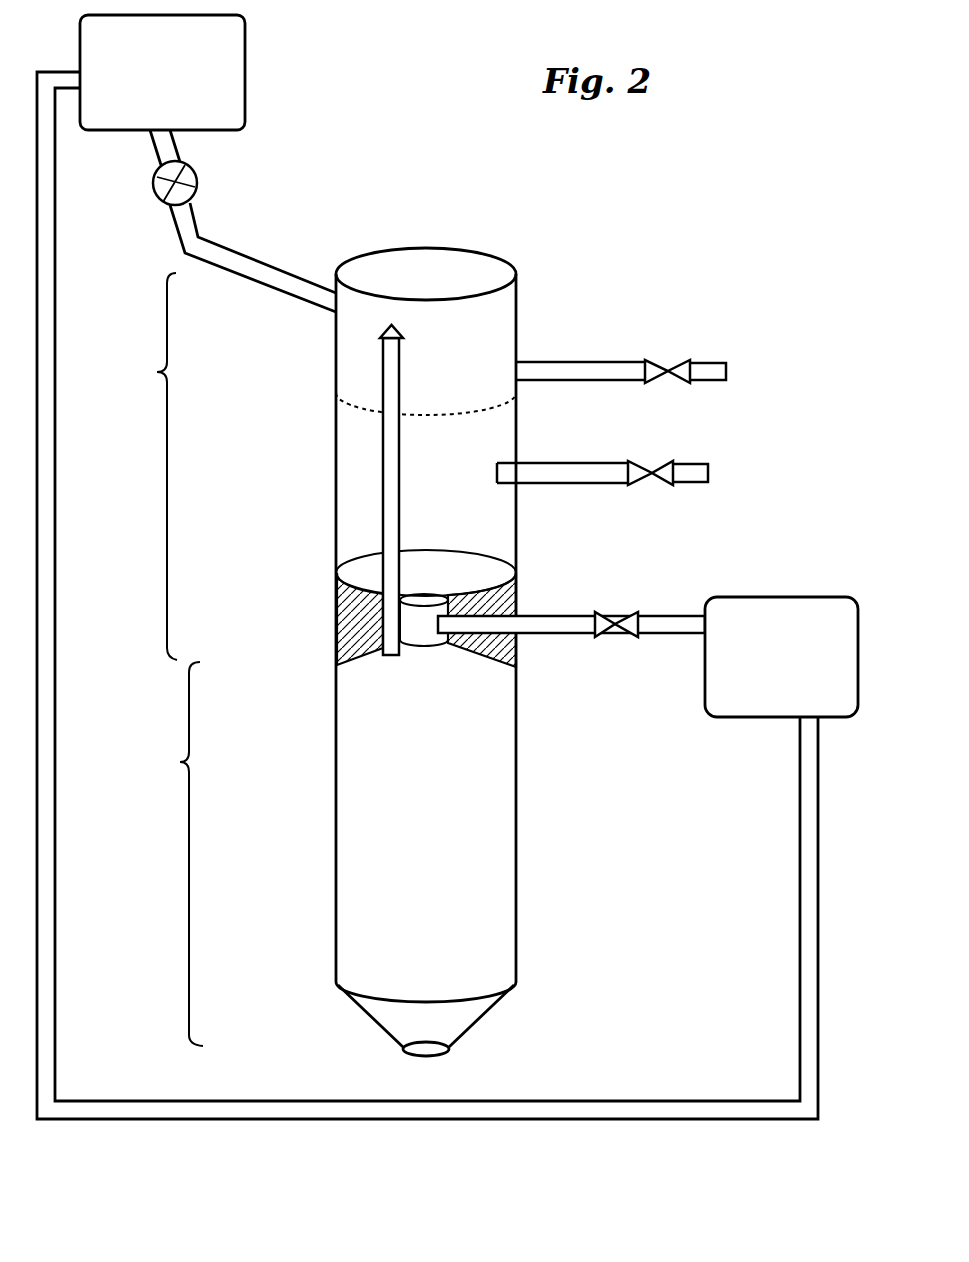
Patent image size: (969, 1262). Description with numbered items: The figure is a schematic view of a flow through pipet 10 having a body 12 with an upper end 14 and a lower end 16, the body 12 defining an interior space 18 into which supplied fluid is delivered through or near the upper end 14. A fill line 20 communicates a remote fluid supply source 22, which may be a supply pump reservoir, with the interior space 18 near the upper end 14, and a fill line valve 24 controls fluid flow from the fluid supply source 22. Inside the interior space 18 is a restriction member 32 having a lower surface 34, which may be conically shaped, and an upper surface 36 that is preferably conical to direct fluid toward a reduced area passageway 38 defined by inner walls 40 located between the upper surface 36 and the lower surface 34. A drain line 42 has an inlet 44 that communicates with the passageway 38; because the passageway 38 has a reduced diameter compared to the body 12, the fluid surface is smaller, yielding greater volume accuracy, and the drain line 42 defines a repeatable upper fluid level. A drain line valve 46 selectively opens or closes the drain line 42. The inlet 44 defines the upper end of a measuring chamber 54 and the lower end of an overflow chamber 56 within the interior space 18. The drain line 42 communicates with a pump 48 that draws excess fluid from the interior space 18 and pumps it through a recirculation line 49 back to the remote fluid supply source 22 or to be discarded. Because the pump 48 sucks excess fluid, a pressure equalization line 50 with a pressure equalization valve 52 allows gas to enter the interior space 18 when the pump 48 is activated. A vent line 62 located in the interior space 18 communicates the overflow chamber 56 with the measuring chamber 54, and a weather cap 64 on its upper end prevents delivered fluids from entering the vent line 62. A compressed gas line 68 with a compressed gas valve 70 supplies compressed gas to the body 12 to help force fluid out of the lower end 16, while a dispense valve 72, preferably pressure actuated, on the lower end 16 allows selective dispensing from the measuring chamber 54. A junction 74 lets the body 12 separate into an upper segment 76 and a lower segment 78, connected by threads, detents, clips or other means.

The flow through pipet 10 is at (517, 207).
The body 12 is at (517, 838).
The upper end 14 is at (385, 240).
The lower end 16 is at (365, 1032).
The interior space 18 is at (457, 790).
The fill line 20 is at (187, 240).
The remote fluid supply source 22 is at (180, 87).
The fill line valve 24 is at (160, 202).
The restriction member 32 is at (358, 625).
The lower surface 34 is at (363, 665).
The upper surface 36 is at (340, 562).
The reduced area passageway 38 is at (440, 560).
The inner walls 40 is at (430, 597).
The drain line 42 is at (663, 622).
The inlet 44 is at (428, 628).
The drain line valve 46 is at (613, 625).
The pump 48 is at (762, 672).
The recirculation line 49 is at (627, 1107).
The pressure equalization line 50 is at (620, 370).
The pressure equalization valve 52 is at (678, 362).
The measuring chamber 54 is at (171, 854).
The overflow chamber 56 is at (146, 466).
The vent line 62 is at (392, 510).
The weather cap 64 is at (380, 330).
The compressed gas line 68 is at (580, 473).
The compressed gas valve 70 is at (655, 468).
The dispense valve 72 is at (427, 1055).
The junction 74 is at (470, 410).
The upper segment 76 is at (523, 323).
The lower segment 78 is at (525, 913).